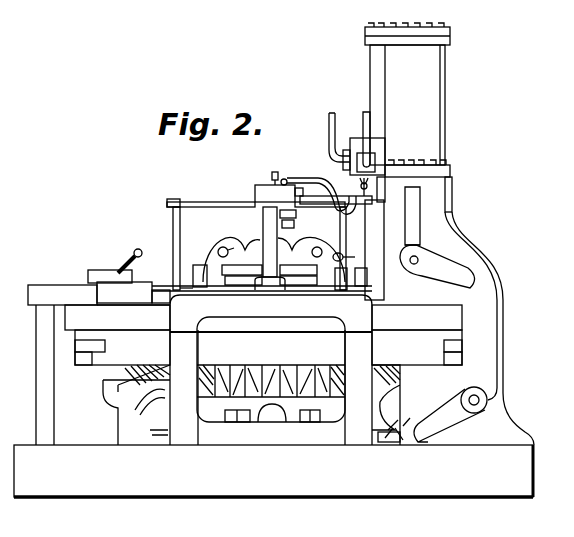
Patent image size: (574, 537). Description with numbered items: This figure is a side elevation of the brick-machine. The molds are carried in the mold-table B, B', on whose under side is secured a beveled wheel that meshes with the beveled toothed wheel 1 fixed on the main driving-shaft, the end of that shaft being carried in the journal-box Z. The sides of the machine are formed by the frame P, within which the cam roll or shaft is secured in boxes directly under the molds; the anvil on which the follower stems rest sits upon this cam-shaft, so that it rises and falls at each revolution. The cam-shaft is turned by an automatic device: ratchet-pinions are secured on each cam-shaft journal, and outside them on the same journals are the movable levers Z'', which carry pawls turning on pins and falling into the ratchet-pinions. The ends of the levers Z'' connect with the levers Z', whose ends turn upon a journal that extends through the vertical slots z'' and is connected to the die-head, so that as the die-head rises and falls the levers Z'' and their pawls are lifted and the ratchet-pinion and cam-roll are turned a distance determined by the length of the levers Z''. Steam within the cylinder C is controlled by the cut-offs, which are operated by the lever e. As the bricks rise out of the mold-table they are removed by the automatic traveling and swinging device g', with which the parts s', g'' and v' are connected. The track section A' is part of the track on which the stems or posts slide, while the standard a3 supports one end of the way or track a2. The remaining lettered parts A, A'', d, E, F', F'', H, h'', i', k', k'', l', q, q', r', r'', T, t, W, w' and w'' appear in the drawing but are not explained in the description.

The base plate A is at (273, 471).
The track section A' is at (136, 405).
The right pedestal A'' is at (386, 405).
The way or track a2 is at (99, 295).
The standard a3 is at (36, 375).
The mold-table B is at (268, 347).
The mold-table B' is at (263, 317).
The cylinder C is at (407, 100).
The cross head block d is at (275, 193).
The magnet core E is at (271, 387).
The lever e is at (293, 192).
The cam F' is at (274, 250).
The cam lever F'' is at (265, 256).
The automatic traveling and swinging device g' is at (124, 292).
The brick-removing device part g'' is at (161, 296).
The magnet yoke H is at (288, 311).
The bracket h'' is at (341, 279).
The valve rod pivot i' is at (342, 158).
The pulley k' is at (344, 253).
The bracket k'' is at (361, 272).
The pipe l' is at (321, 190).
The frame P is at (449, 311).
The pole piece q is at (268, 346).
The pole piece q' is at (268, 358).
The stop r' is at (200, 276).
The block r'' is at (110, 276).
The brick-removing device part s' is at (134, 261).
The standard T is at (262, 245).
The pin t is at (275, 173).
The brick-removing device part v' is at (181, 282).
The weight W is at (269, 281).
The weight support w' is at (271, 281).
The adjusting nut w'' is at (281, 227).
The journal-box Z is at (272, 413).
The lever Z' is at (437, 266).
The movable lever Z'' is at (432, 414).
The vertical slot z'' is at (412, 228).
The beveled toothed wheel 1 is at (271, 369).